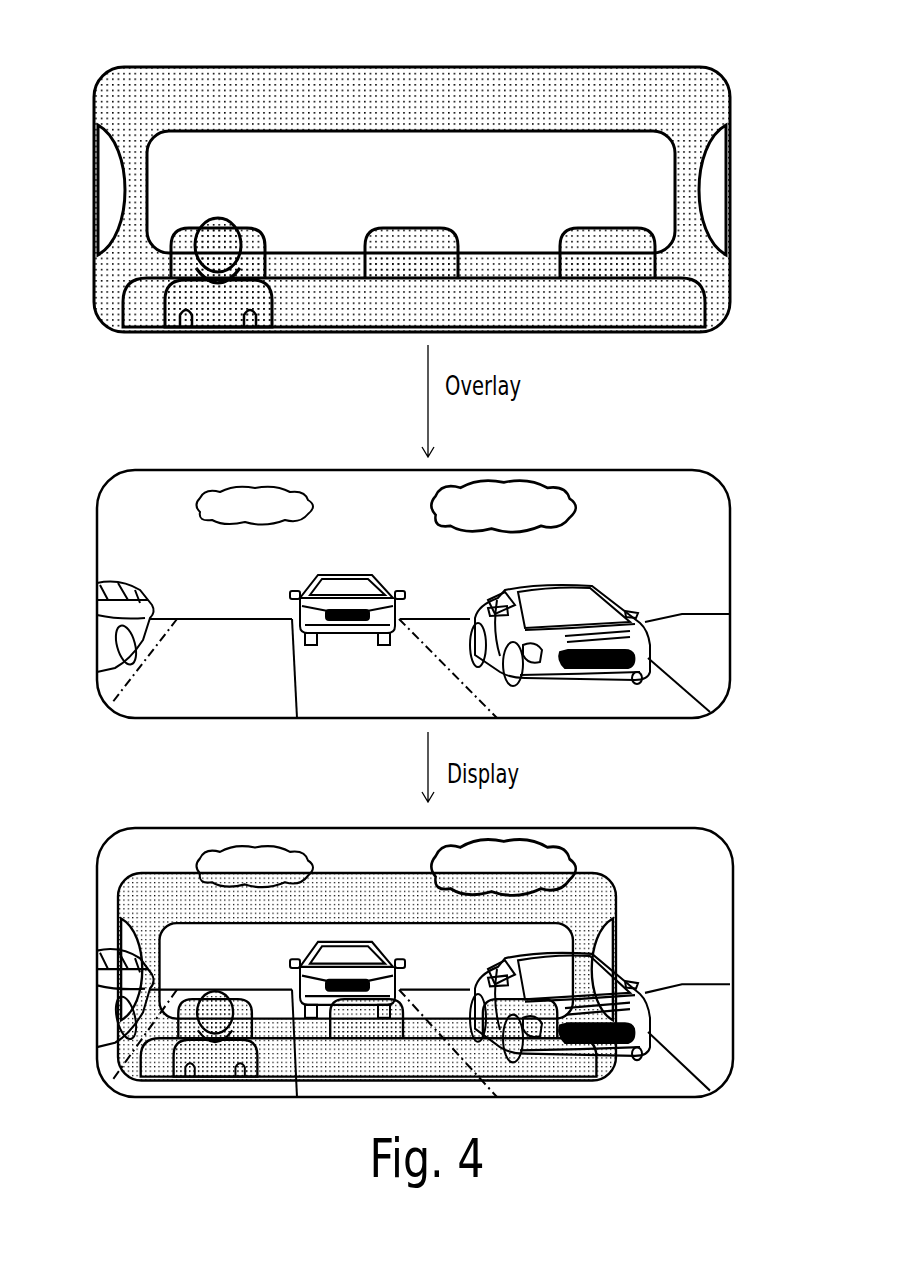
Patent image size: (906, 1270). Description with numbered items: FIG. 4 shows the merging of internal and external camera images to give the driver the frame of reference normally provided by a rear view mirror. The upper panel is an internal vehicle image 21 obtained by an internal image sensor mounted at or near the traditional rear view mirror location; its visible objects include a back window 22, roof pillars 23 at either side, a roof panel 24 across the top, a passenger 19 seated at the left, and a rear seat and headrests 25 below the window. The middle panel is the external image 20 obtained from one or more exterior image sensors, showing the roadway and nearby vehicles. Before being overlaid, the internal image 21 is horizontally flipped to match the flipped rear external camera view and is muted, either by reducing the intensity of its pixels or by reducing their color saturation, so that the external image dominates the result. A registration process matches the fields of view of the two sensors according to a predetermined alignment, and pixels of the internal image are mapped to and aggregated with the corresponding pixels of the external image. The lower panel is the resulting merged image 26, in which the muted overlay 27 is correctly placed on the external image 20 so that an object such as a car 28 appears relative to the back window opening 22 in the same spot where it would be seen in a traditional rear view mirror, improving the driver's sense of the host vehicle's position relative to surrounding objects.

The passenger 19 is at (214, 325).
The external image 20 is at (728, 472).
The internal vehicle image 21 is at (413, 201).
The back window 22 is at (546, 172).
The roof pillars 23 is at (135, 217).
The roof panel 24 is at (232, 92).
The rear seat and headrests 25 is at (405, 252).
The merged image 26 is at (400, 933).
The overlay 27 is at (143, 896).
The car 28 is at (328, 957).